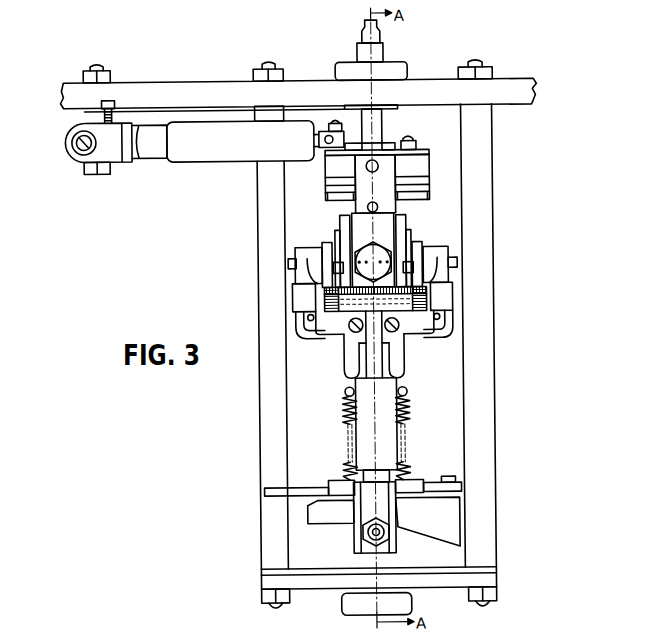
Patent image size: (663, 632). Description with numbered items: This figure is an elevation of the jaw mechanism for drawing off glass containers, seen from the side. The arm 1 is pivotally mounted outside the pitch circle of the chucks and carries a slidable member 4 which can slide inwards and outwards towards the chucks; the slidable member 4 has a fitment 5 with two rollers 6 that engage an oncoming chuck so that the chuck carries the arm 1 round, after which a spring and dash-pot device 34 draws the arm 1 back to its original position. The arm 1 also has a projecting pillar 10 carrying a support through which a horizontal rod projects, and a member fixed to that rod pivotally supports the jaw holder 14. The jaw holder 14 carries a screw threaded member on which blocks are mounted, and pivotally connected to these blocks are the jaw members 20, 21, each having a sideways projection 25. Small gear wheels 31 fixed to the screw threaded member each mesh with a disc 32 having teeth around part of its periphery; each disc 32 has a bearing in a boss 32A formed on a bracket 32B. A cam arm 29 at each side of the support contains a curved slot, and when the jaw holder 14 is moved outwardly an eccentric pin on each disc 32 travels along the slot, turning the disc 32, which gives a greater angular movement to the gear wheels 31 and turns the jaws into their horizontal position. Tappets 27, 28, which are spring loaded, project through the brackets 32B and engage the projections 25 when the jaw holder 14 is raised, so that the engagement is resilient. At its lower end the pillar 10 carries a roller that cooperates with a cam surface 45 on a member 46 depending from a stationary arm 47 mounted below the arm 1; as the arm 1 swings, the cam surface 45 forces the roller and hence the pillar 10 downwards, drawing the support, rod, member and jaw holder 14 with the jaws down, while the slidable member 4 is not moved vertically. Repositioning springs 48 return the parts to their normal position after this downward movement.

The arm 1 is at (381, 430).
The slidable member 4 is at (389, 168).
The fitment 5 is at (424, 148).
The rollers 6 is at (333, 187).
The projecting pillar 10 is at (384, 368).
The jaw holder 14 is at (351, 313).
The jaw member 20 is at (400, 360).
The jaw member 21 is at (347, 368).
The sideways projection 25 is at (327, 318).
The tappet 27 is at (452, 316).
The tappet 28 is at (302, 323).
The cam arm 29 is at (340, 234).
The gear wheel 31 is at (320, 305).
The disc 32 is at (328, 252).
The boss 32A is at (305, 279).
The bracket 32B is at (313, 308).
The spring and dash-pot device 34 is at (228, 146).
The cam surface 45 is at (414, 537).
The member 46 is at (332, 513).
The stationary arm 47 is at (322, 478).
The repositioning springs 48 is at (343, 417).